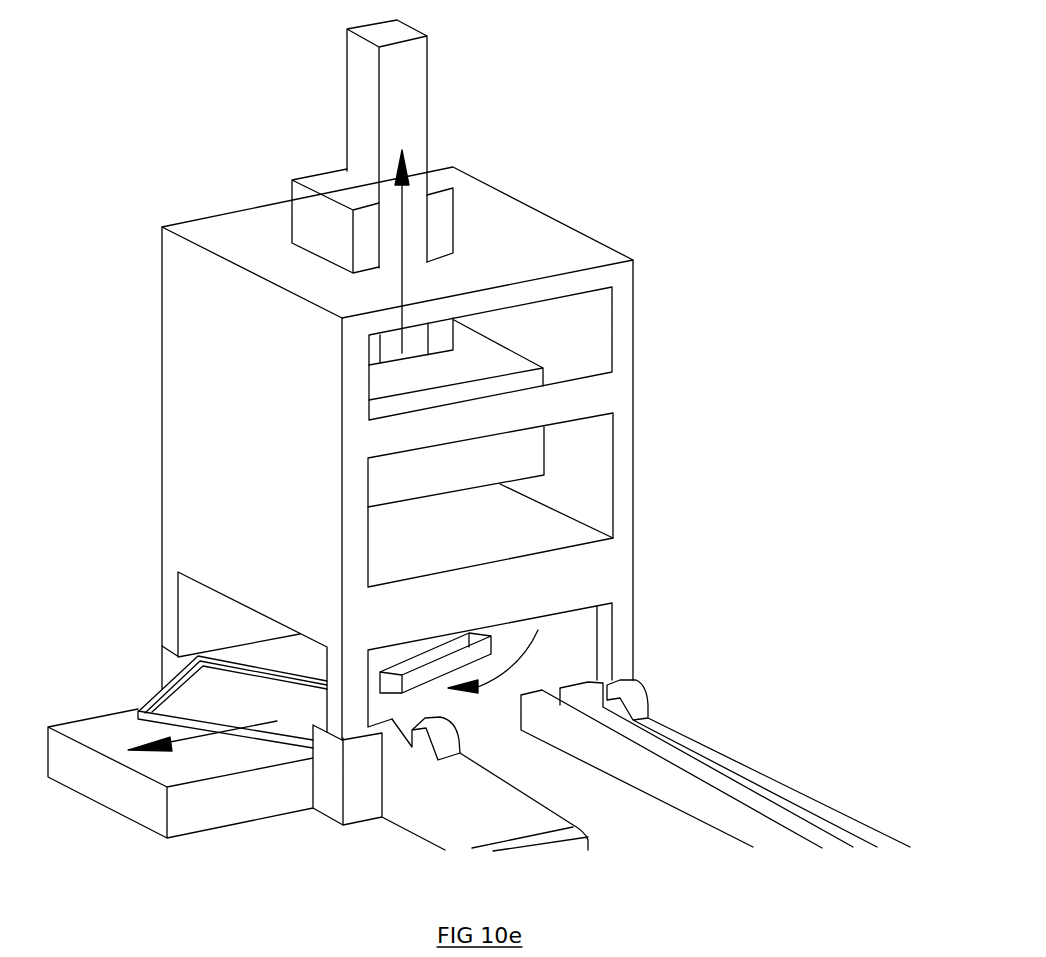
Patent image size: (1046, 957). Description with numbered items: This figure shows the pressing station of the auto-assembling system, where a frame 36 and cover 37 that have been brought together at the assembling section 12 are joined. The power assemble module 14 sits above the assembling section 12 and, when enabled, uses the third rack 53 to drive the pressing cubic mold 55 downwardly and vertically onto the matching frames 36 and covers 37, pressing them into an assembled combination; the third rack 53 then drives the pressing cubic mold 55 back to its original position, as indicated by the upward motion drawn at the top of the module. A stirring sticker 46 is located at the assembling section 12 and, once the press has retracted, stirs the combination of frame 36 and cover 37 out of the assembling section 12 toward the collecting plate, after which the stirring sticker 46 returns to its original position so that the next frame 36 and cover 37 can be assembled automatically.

The power assemble module 14 is at (320, 220).
The third rack 53 is at (412, 335).
The pressing cubic mold 55 is at (460, 475).
The stirring sticker 46 is at (468, 631).
The frame 36 is at (178, 690).
The cover 37 is at (238, 705).
The assembling section 12 is at (468, 704).